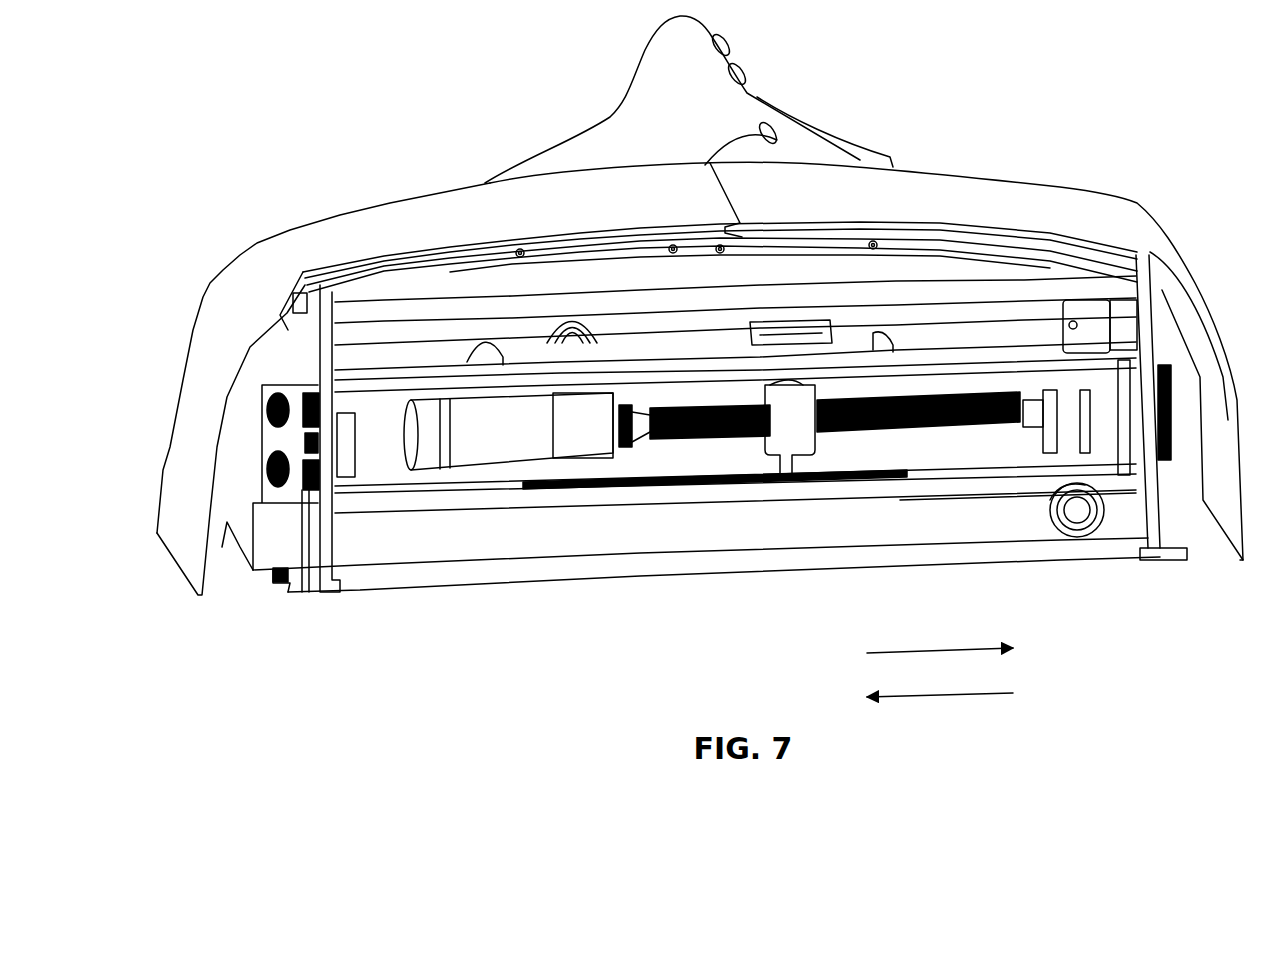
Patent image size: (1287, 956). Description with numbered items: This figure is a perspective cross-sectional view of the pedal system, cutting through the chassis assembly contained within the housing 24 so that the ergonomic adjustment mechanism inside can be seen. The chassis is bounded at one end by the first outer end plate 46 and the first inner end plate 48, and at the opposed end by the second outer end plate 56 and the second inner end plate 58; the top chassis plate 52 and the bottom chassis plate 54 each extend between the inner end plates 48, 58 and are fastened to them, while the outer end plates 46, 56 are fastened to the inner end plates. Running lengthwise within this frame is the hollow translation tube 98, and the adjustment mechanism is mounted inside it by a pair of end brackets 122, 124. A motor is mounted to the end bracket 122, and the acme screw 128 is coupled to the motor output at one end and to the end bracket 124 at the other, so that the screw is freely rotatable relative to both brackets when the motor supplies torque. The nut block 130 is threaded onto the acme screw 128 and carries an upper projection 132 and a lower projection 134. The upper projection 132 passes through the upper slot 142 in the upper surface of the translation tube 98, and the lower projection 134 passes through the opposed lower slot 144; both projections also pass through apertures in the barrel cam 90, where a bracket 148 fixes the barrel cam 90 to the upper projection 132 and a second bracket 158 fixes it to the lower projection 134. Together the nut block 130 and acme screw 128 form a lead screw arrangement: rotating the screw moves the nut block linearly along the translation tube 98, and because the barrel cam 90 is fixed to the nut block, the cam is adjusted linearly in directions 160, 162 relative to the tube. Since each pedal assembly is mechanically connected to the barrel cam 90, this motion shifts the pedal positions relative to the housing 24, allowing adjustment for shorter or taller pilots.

The housing 24 is at (345, 232).
The top chassis plate 52 is at (440, 305).
The upper projection 132 is at (705, 378).
The bracket 148 is at (800, 335).
The upper slot 142 is at (887, 338).
The nut block 130 is at (903, 378).
The acme screw 128 is at (955, 388).
The end bracket 124 is at (1028, 390).
The first outer end plate 46 is at (263, 548).
The first inner end plate 48 is at (310, 550).
The barrel cam 90 is at (580, 527).
The end bracket 122 is at (643, 497).
The bottom chassis plate 54 is at (706, 567).
The bracket 158 is at (770, 517).
The lower projection 134 is at (834, 478).
The lower slot 144 is at (893, 490).
The translation tube 98 is at (952, 487).
The second inner end plate 58 is at (1130, 513).
The second outer end plate 56 is at (1170, 523).
The linear direction 160 is at (877, 655).
The linear direction 162 is at (930, 700).